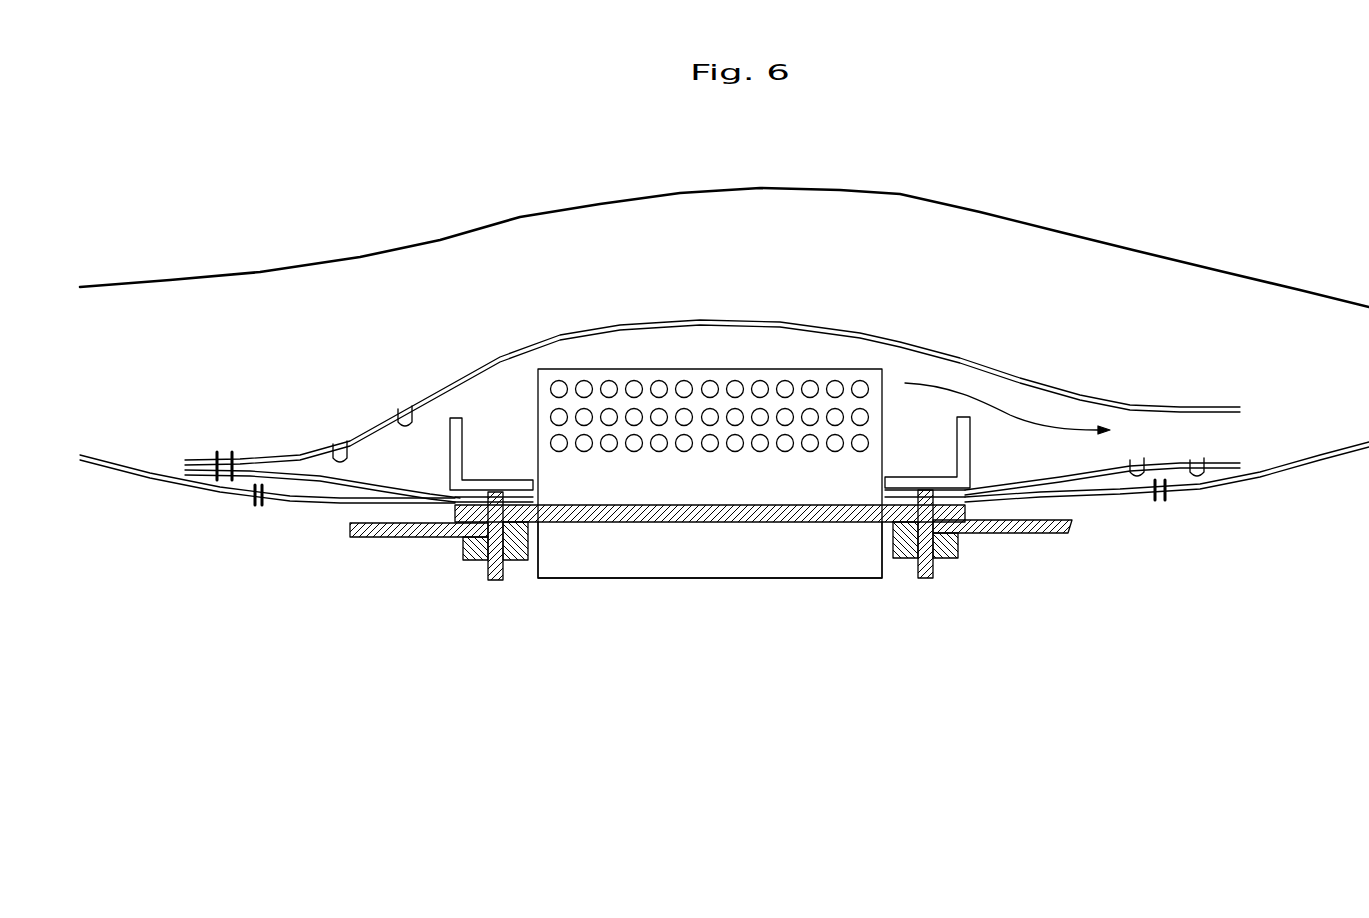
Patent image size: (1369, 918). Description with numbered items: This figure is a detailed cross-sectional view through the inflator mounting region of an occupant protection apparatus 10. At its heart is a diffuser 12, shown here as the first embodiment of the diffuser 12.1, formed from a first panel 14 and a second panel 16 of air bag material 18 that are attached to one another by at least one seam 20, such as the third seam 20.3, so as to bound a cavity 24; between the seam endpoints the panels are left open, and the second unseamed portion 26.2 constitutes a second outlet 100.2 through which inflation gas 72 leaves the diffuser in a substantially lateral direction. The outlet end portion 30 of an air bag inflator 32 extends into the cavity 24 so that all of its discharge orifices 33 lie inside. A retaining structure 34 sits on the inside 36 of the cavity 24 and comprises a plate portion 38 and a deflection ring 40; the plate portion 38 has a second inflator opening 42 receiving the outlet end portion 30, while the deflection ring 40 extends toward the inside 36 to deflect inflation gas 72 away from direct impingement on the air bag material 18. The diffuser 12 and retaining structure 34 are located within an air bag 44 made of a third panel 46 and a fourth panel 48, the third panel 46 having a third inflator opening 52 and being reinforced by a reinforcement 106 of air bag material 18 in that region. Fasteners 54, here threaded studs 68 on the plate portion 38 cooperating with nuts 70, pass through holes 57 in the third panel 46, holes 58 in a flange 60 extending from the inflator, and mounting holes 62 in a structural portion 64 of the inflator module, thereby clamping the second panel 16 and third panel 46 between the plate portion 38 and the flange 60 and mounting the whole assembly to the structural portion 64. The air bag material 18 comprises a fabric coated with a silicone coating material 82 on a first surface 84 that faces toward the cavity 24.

The occupant protection apparatus 10 is at (1155, 168).
The diffuser 12 is at (712, 410).
The first embodiment of the diffuser 12.1 is at (930, 332).
The first panel 14 is at (712, 437).
The second panel 16 is at (289, 476).
The air bag material 18 is at (724, 366).
The seam 20 is at (267, 446).
The third seam 20.3 is at (209, 434).
The cavity 24 is at (470, 391).
The second unseamed portion 26.2 is at (1268, 447).
The outlet end portion 30 is at (710, 451).
The air bag inflator 32 is at (710, 580).
The discharge orifices 33 is at (788, 381).
The retaining structure 34 is at (470, 391).
The inside of the cavity 36 is at (927, 441).
The plate portion 38 is at (470, 391).
The deflection ring 40 is at (432, 476).
The second inflator opening 42 is at (922, 418).
The air bag 44 is at (724, 366).
The third panel 46 is at (1148, 491).
The fourth panel 48 is at (945, 203).
The third inflator opening 52 is at (878, 498).
The fasteners 54 is at (710, 559).
The holes 57 is at (548, 498).
The holes 58 is at (548, 527).
The flange 60 is at (672, 522).
The mounting holes 62 is at (710, 559).
The structural portion 64 is at (351, 523).
The threaded studs 68 is at (496, 582).
The nuts 70 is at (512, 560).
The inflation gas 72 is at (1012, 418).
The silicone coating material 82 is at (684, 207).
The first surface 84 is at (773, 203).
The second outlet 100.2 is at (1258, 420).
The reinforcement 106 is at (241, 492).